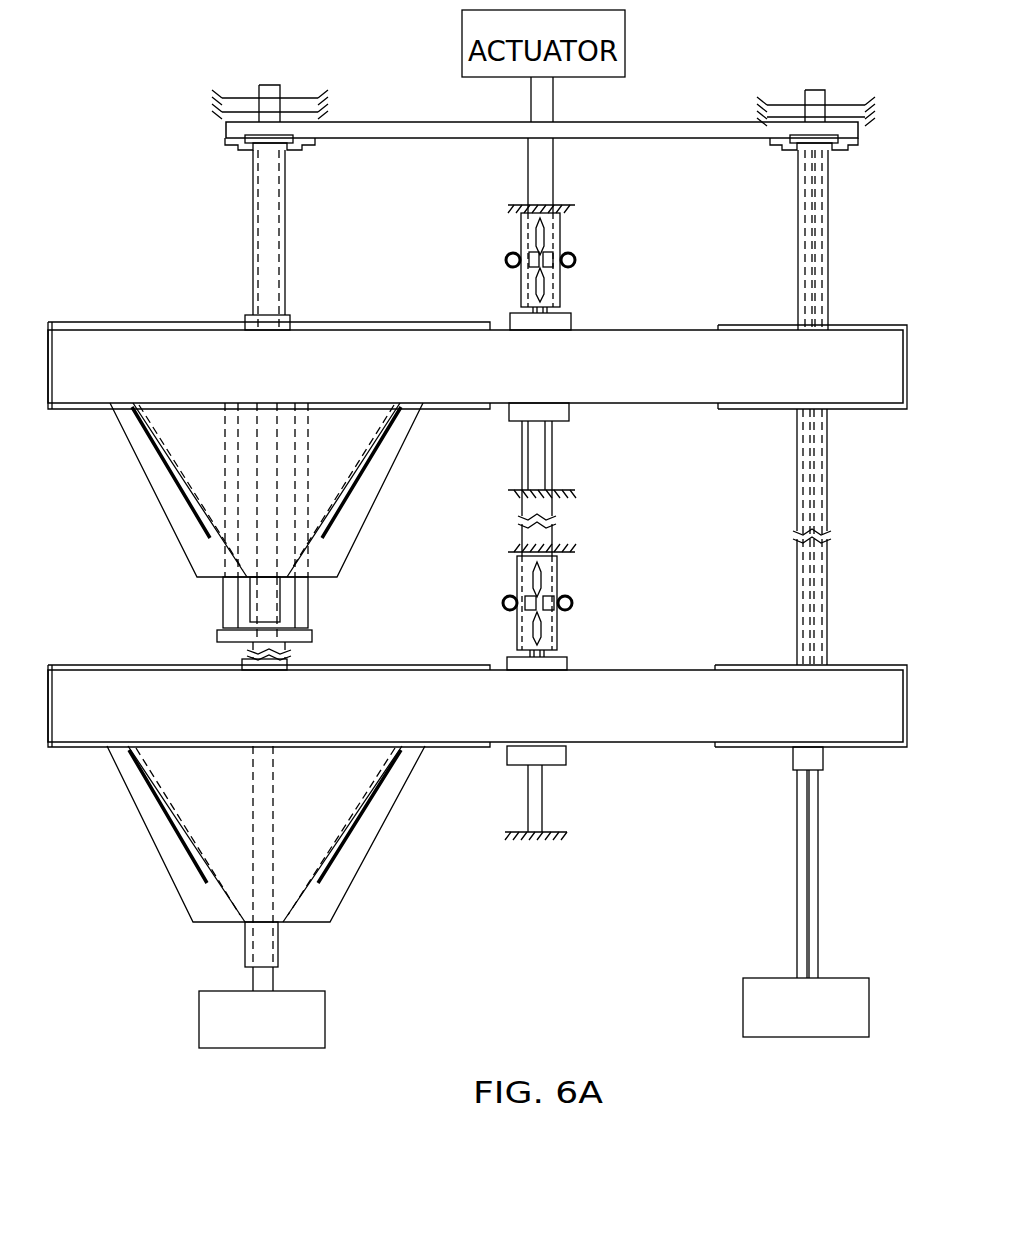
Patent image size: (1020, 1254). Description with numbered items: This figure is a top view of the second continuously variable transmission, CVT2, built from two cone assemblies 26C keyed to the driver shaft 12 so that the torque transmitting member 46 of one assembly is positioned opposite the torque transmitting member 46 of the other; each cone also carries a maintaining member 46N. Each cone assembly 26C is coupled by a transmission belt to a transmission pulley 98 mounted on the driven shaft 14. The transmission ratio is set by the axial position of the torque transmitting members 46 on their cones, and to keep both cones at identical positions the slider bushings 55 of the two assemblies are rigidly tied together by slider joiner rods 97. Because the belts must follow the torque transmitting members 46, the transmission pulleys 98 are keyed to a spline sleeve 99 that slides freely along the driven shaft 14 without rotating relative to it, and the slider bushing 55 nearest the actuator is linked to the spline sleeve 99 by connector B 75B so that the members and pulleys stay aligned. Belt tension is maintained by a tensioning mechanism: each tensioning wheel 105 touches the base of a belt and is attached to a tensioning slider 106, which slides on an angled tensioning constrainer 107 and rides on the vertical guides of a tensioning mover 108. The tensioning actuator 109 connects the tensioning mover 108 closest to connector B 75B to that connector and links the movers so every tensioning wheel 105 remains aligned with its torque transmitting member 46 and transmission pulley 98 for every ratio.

The connector B 75B is at (408, 127).
The tensioning actuator 109 is at (537, 182).
The slider bushing 55 is at (280, 237).
The maintaining member 46N is at (63, 322).
The torque transmitting member 46 is at (450, 404).
The cone assembly C 26C is at (313, 465).
The slider joiner rod 97 is at (233, 615).
The transmission pulley 98 is at (847, 333).
The spline sleeve 99 is at (825, 482).
The tensioning slider 106 is at (558, 287).
The tensioning mover 108 is at (528, 258).
The tensioning wheel 105 is at (555, 325).
The tensioning constrainer 107 is at (538, 449).
The driver shaft 12 is at (255, 978).
The driven shaft 14 is at (812, 960).